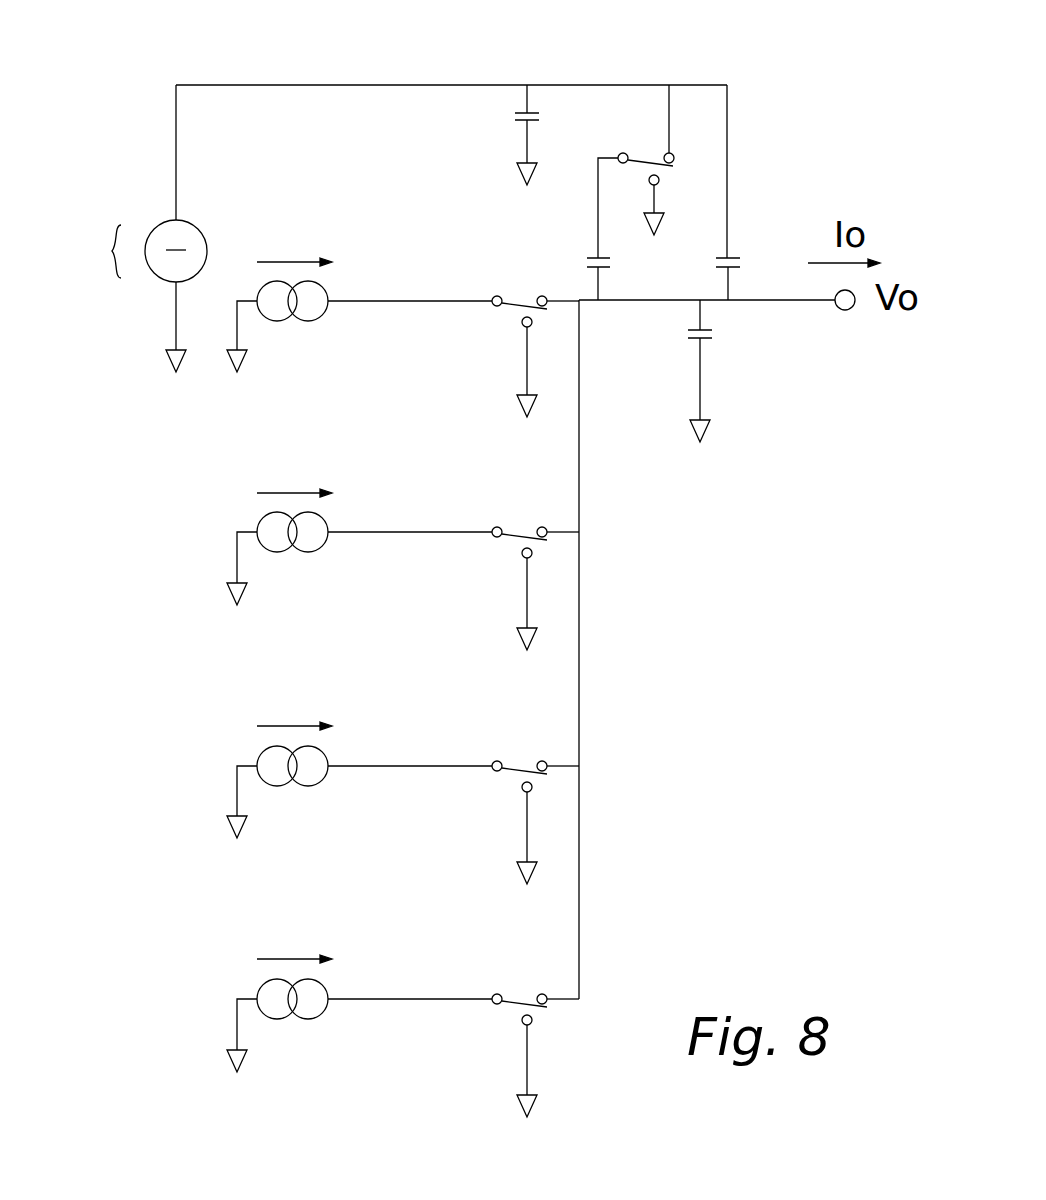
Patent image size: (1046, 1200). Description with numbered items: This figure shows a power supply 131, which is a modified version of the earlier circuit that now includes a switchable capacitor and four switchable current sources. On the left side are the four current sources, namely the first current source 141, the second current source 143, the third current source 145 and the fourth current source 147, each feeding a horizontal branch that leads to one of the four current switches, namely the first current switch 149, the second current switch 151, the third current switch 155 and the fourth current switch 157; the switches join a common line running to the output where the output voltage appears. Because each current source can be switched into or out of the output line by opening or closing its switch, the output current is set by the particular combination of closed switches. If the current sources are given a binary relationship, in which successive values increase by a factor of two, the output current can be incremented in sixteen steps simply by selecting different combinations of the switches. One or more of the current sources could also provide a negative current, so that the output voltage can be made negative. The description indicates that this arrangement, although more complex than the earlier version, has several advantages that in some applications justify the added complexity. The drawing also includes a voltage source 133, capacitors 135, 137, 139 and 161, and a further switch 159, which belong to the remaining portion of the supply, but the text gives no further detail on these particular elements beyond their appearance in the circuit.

The power supply 131 is at (154, 62).
The voltage source V 133 is at (153, 215).
The capacitor C2 135 is at (683, 331).
The capacitor C1 137 is at (743, 242).
The capacitor C4 139 is at (527, 72).
The current source I1 141 is at (290, 326).
The current source I2 143 is at (290, 557).
The current source I3 145 is at (290, 791).
The current source I4 147 is at (290, 1024).
The current switch S1 149 is at (505, 313).
The current switch S2 151 is at (505, 546).
The current switch S3 155 is at (505, 780).
The current switch S4 157 is at (505, 1013).
The switch S5 159 is at (684, 127).
The capacitor C3 161 is at (575, 258).